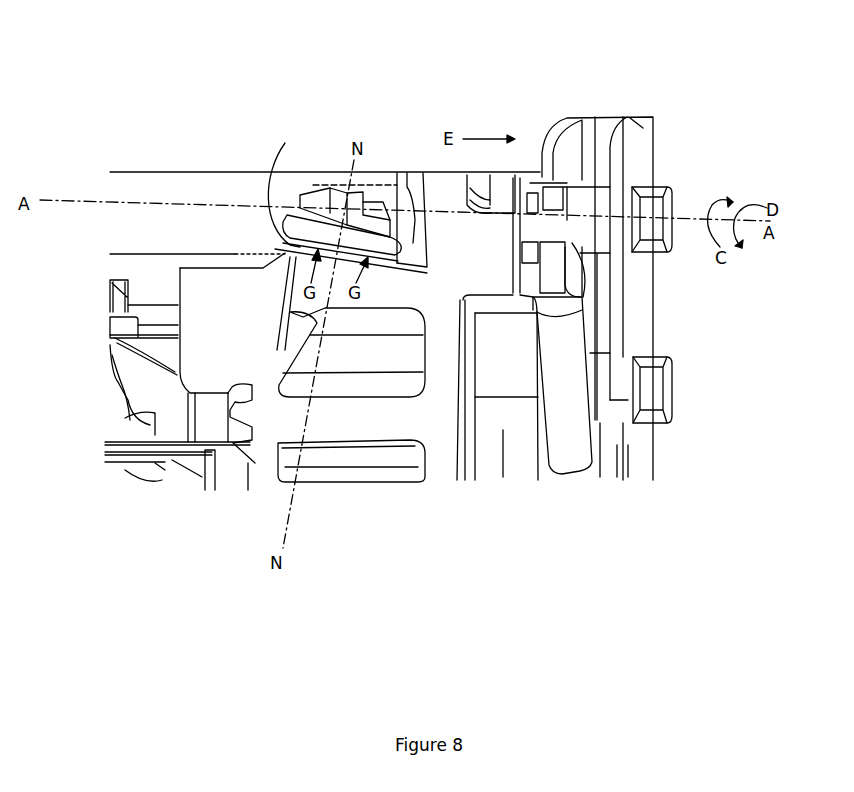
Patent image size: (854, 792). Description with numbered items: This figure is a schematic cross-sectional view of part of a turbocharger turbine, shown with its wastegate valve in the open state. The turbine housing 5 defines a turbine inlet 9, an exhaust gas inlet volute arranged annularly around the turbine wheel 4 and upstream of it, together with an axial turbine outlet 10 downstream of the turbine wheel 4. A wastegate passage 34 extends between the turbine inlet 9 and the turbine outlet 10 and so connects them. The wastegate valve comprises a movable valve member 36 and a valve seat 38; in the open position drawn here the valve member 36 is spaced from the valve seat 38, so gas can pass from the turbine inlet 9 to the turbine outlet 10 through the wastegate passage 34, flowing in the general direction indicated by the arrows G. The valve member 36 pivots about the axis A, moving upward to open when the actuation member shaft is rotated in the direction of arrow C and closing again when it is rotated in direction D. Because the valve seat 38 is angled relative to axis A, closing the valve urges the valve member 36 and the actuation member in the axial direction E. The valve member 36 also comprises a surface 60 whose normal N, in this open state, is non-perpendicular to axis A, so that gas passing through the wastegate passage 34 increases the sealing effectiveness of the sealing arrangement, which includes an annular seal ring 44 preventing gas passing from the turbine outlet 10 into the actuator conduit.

The turbine outlet 10 is at (186, 215).
The turbine housing 5 is at (230, 300).
The turbine wheel 4 is at (172, 405).
The valve seat 38 is at (294, 250).
The surface 60 is at (280, 168).
The wastegate passage 34 is at (370, 303).
The valve member 36 is at (382, 188).
The annular seal ring 44 is at (384, 190).
The turbine inlet 9 is at (343, 450).